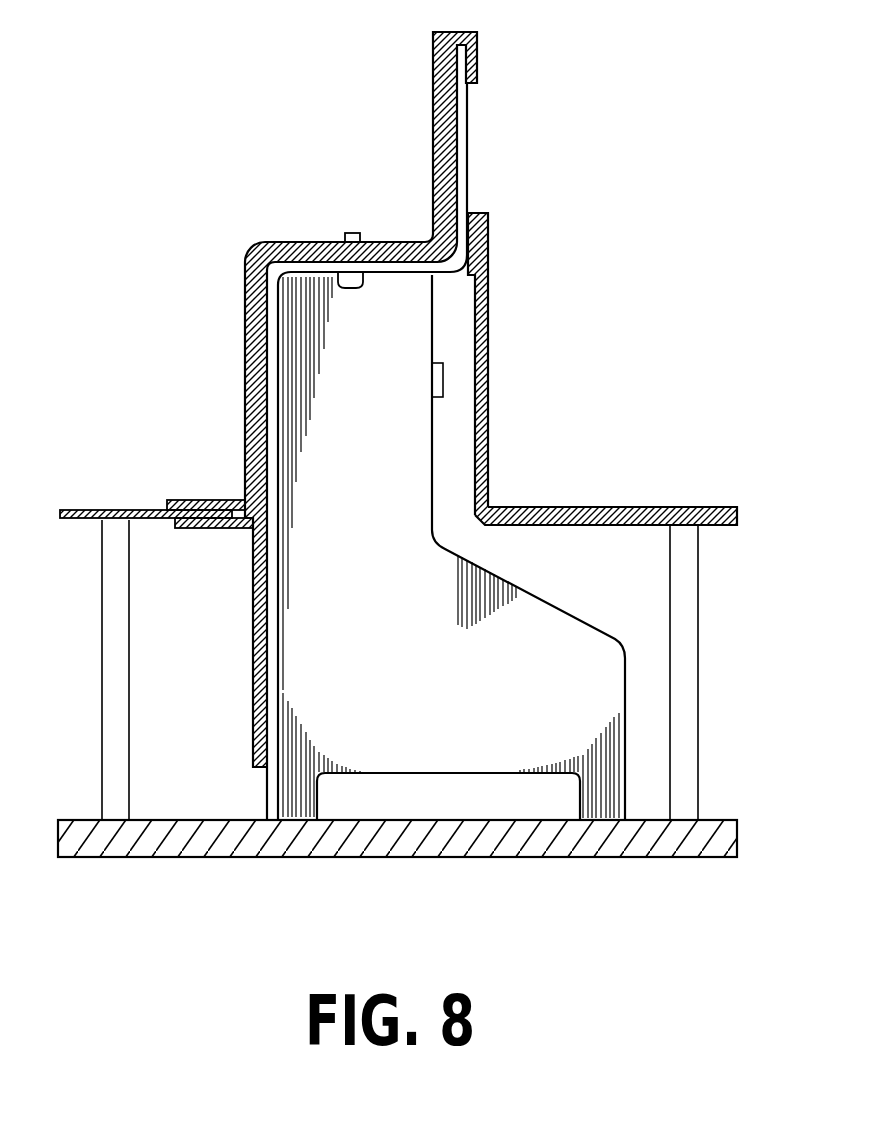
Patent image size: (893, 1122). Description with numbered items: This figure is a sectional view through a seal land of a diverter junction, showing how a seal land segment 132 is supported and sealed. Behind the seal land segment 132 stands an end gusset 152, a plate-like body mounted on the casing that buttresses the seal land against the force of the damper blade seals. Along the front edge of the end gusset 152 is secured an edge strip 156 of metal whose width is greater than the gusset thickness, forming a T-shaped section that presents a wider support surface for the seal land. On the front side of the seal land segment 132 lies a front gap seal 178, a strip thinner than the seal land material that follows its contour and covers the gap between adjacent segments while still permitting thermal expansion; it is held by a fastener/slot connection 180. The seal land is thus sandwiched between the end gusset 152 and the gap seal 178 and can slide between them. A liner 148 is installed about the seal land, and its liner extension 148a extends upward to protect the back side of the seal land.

The seal land segment 132 is at (245, 405).
The liner 148 is at (648, 507).
The liner extension 148a is at (488, 262).
The end gusset 152 is at (400, 473).
The edge strip 156 is at (468, 152).
The front gap seal 178 is at (264, 243).
The fastener/slot connection 180 is at (357, 232).